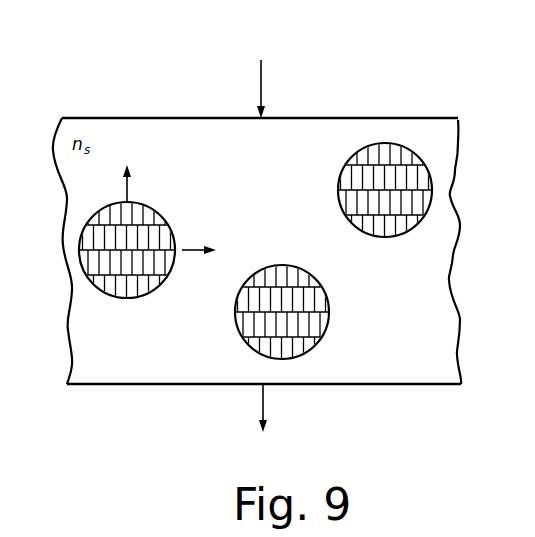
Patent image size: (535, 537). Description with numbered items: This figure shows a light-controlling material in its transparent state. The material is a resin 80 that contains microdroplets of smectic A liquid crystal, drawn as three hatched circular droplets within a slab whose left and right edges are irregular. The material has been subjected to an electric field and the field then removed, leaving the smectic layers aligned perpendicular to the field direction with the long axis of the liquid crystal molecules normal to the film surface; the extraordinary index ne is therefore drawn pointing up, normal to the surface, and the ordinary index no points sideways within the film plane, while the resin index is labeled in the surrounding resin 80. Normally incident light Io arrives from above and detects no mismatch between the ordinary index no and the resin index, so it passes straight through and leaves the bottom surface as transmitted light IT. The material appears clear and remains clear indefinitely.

The resin 80 is at (184, 130).
The incident light Io is at (254, 71).
The transmitted light IT is at (279, 422).
The extraordinary refractive index ne is at (137, 180).
The ordinary refractive index no is at (210, 251).